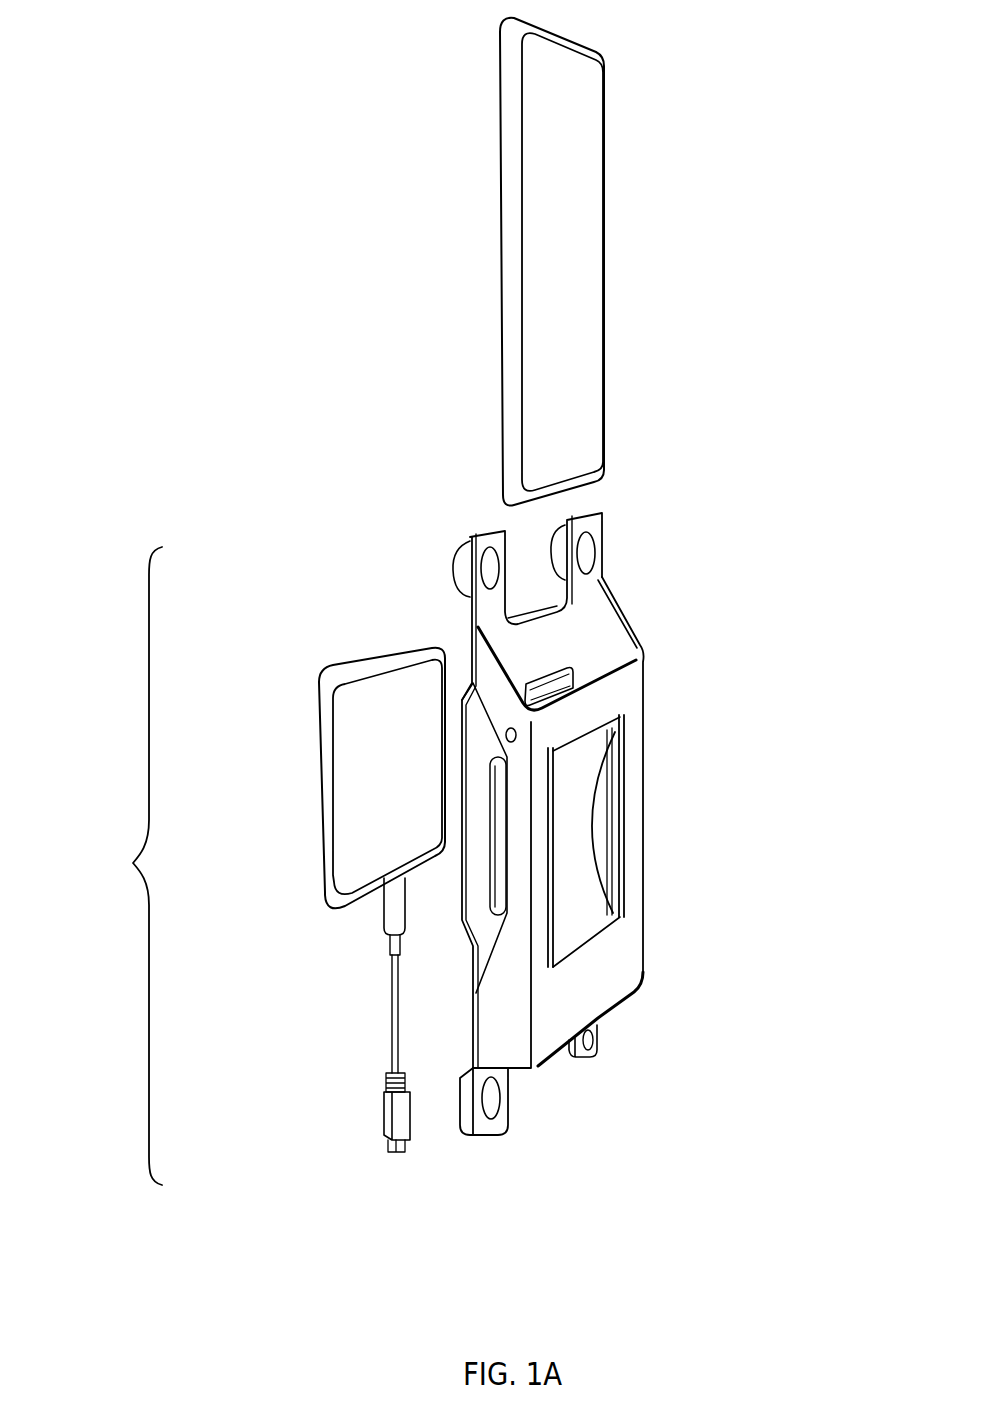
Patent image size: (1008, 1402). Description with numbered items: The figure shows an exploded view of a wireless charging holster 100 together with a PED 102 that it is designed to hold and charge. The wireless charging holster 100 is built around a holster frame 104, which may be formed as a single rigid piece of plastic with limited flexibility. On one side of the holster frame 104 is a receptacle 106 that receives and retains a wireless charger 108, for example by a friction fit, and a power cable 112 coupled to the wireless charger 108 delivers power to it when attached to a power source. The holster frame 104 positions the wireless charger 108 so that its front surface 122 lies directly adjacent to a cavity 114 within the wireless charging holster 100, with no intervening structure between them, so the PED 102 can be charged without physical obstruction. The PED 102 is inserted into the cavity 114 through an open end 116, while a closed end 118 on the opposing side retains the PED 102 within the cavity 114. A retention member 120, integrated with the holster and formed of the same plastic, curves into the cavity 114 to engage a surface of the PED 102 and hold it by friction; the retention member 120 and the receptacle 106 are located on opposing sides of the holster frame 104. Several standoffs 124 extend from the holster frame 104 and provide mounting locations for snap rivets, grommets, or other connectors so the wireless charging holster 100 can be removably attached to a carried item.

The wireless charging holster 100 is at (110, 866).
The PED 102 is at (572, 175).
The holster frame 104 is at (628, 738).
The receptacle 106 is at (462, 865).
The wireless charger 108 is at (372, 658).
The power cable 112 is at (388, 1022).
The cavity 114 is at (647, 578).
The open end 116 is at (612, 648).
The closed end 118 is at (551, 1038).
The retention member 120 is at (580, 828).
The front surface 122 is at (365, 822).
The standoffs 124 is at (600, 525).